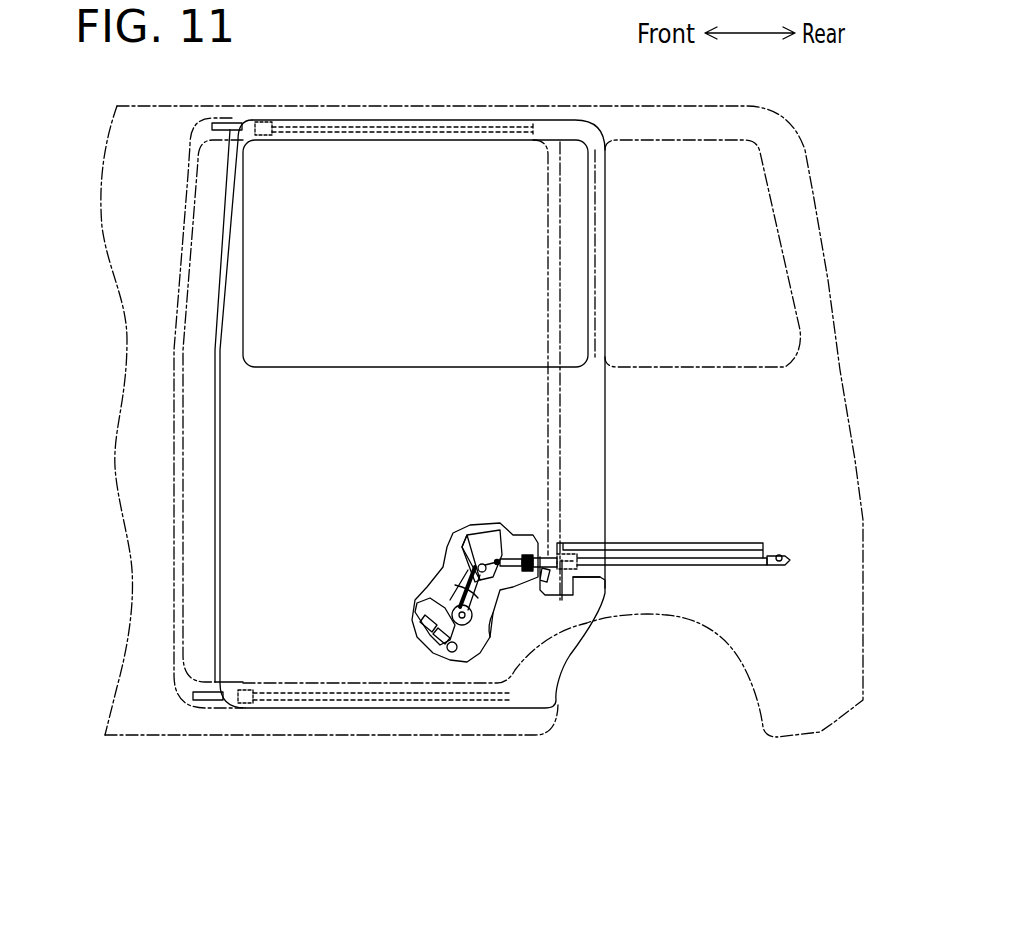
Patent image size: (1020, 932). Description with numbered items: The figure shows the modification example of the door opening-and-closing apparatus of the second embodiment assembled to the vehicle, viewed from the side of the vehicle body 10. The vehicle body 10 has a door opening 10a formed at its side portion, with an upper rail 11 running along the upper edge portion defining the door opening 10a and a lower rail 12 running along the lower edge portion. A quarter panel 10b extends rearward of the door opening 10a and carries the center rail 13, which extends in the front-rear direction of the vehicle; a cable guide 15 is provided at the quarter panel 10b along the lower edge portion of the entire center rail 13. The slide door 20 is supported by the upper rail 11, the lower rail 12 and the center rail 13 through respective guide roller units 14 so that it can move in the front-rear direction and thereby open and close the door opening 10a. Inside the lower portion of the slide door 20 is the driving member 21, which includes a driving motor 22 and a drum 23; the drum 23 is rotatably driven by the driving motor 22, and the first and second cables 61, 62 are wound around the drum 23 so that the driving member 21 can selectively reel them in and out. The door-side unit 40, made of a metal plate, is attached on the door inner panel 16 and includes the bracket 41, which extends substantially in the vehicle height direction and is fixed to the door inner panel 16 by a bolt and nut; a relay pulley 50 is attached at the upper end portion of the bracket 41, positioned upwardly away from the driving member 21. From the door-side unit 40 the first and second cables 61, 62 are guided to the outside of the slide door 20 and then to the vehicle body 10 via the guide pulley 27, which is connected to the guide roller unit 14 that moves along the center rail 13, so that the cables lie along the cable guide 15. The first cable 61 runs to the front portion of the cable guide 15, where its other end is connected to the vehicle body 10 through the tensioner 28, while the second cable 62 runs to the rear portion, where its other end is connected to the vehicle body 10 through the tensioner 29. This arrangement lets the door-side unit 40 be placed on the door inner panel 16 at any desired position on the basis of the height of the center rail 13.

The vehicle body 10 is at (640, 107).
The door opening 10a is at (195, 168).
The quarter panel 10b is at (675, 603).
The upper rail 11 is at (227, 122).
The lower rail 12 is at (193, 696).
The center rail 13 is at (697, 553).
The guide roller unit 14 is at (262, 121).
The cable guide 15 is at (740, 564).
The door inner panel 16 is at (520, 543).
The slide door 20 is at (572, 128).
The driving member 21 is at (412, 602).
The driving motor 22 is at (418, 620).
The drum 23 is at (490, 637).
The guide pulley 27 is at (585, 570).
The tensioner 28 is at (560, 590).
The tensioner 29 is at (785, 567).
The door-side unit 40 is at (422, 549).
The bracket 41 is at (482, 543).
The relay pulley 50 is at (455, 545).
The first cable 61 is at (453, 578).
The second cable 62 is at (473, 595).